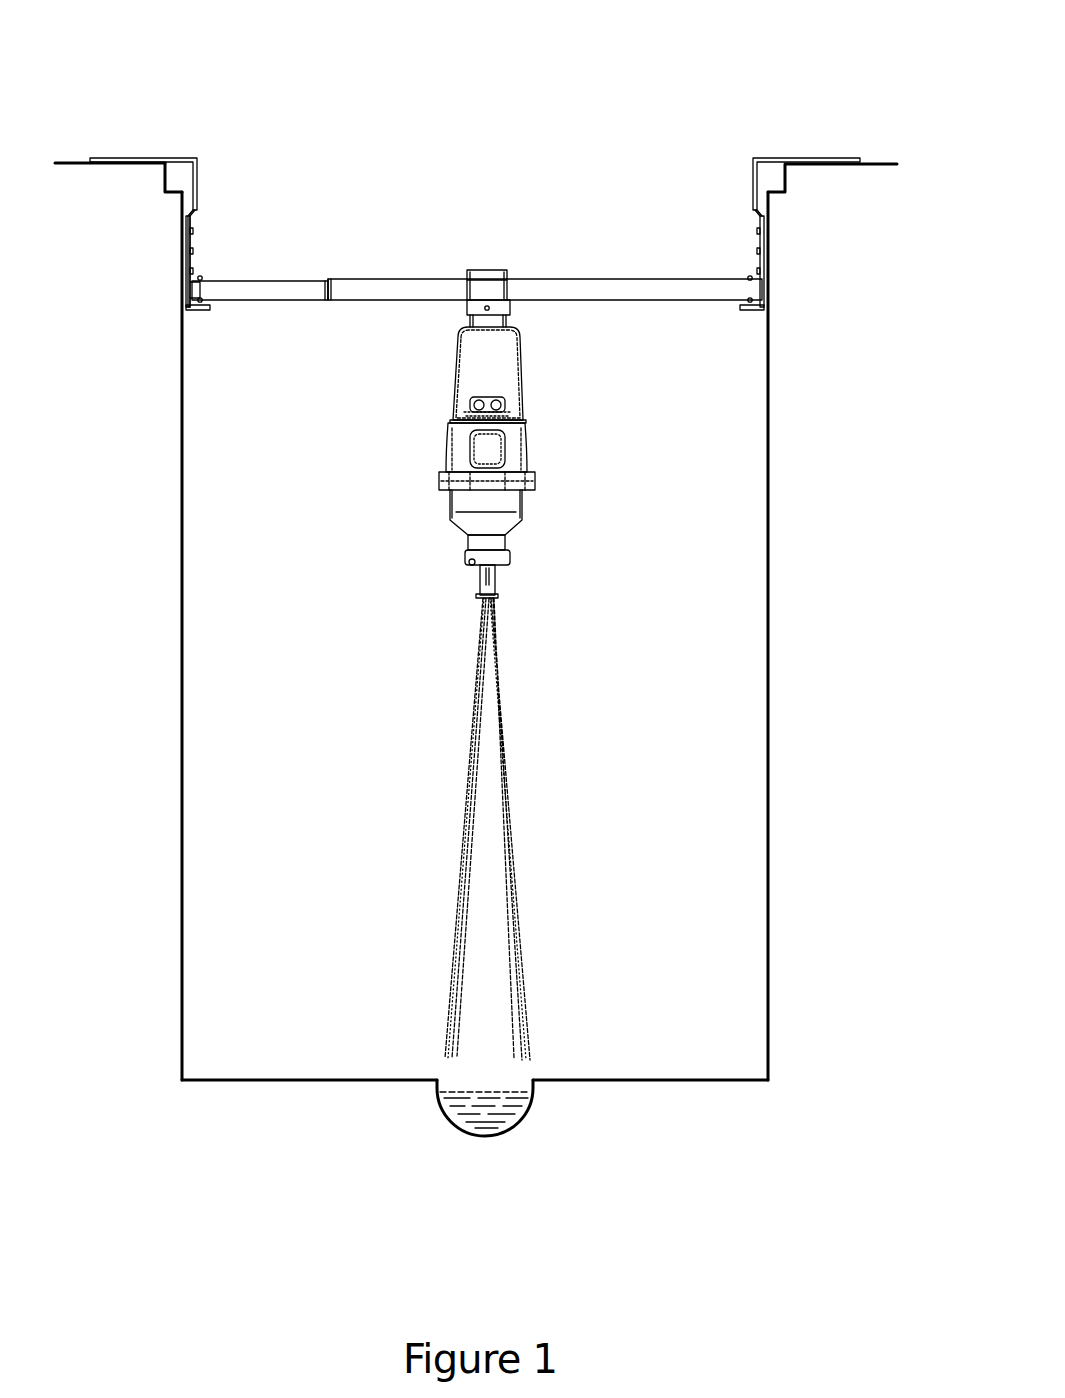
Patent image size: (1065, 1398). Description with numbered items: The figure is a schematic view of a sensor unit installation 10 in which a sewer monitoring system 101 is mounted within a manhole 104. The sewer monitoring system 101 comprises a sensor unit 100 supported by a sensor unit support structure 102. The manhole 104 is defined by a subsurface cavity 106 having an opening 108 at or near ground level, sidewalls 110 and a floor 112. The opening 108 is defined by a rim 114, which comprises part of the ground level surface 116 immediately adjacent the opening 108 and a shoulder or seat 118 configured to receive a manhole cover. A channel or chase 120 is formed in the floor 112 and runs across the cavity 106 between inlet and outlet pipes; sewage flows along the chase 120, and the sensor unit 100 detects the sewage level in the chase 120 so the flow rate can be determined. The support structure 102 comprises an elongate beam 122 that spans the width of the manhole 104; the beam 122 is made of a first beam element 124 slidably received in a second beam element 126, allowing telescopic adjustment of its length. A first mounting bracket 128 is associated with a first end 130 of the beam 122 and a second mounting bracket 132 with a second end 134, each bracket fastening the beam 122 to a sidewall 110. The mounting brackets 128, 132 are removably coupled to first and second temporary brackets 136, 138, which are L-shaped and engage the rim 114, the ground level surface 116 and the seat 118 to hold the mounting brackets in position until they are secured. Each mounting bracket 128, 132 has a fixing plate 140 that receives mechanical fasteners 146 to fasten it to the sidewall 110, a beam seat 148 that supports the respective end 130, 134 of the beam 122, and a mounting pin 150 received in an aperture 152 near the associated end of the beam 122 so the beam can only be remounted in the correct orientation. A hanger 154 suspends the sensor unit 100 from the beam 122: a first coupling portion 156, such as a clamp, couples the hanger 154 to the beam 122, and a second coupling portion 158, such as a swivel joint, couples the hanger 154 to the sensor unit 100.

The sensor unit installation 10 is at (758, 40).
The sensor unit 100 is at (522, 454).
The sewer monitoring system 101 is at (482, 185).
The sensor unit support structure 102 is at (565, 280).
The manhole 104 is at (686, 774).
The subsurface cavity 106 is at (702, 884).
The opening 108 is at (582, 133).
The sidewall 110 is at (182, 600).
The floor 112 is at (262, 1085).
The rim 114 is at (135, 200).
The ground level surface 116 is at (78, 163).
The manhole cover seat 118 is at (172, 190).
The chase 120 is at (465, 1075).
The elongate beam 122 is at (412, 287).
The first beam element 124 is at (288, 290).
The second beam element 126 is at (350, 292).
The first mounting bracket 128 is at (189, 242).
The first end of the beam 130 is at (198, 323).
The second mounting bracket 132 is at (763, 235).
The second end of the beam 134 is at (752, 323).
The first temporary bracket 136 is at (196, 173).
The second temporary bracket 138 is at (770, 160).
The fixing plate 140 is at (765, 285).
The mechanical fasteners 146 is at (763, 273).
The beam seat 148 is at (192, 305).
The mounting pin 150 is at (202, 277).
The aperture 152 is at (197, 283).
The hanger 154 is at (458, 350).
The first coupling portion 156 is at (468, 307).
The second coupling portion 158 is at (467, 420).